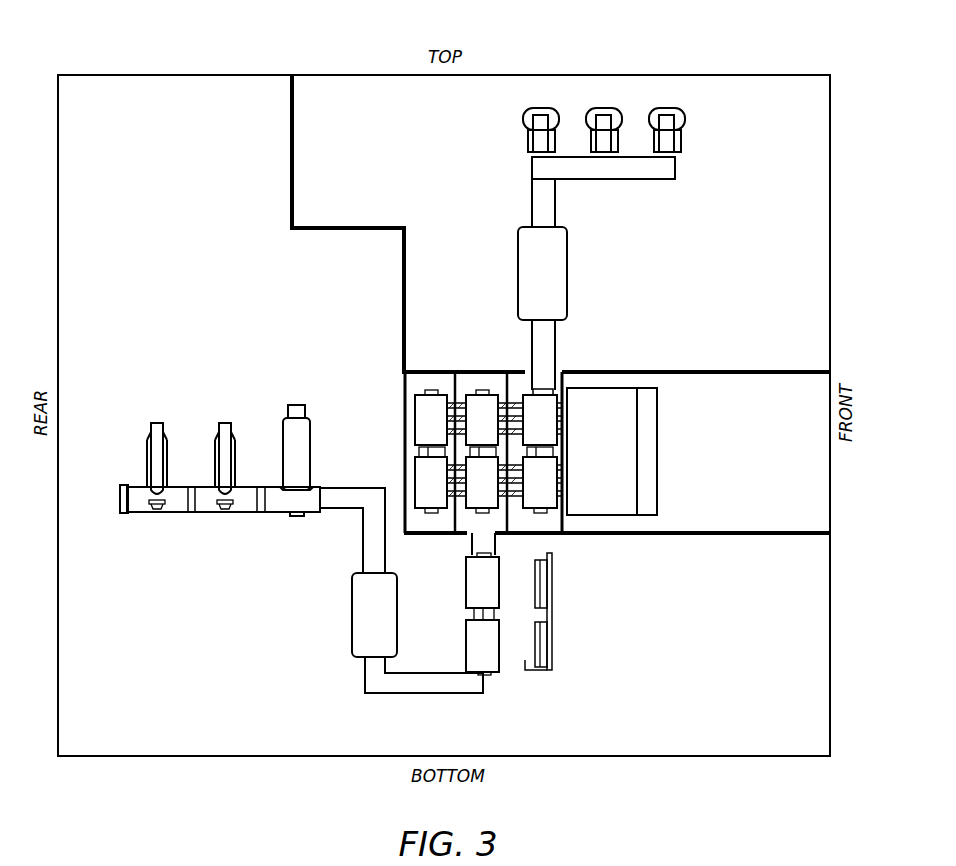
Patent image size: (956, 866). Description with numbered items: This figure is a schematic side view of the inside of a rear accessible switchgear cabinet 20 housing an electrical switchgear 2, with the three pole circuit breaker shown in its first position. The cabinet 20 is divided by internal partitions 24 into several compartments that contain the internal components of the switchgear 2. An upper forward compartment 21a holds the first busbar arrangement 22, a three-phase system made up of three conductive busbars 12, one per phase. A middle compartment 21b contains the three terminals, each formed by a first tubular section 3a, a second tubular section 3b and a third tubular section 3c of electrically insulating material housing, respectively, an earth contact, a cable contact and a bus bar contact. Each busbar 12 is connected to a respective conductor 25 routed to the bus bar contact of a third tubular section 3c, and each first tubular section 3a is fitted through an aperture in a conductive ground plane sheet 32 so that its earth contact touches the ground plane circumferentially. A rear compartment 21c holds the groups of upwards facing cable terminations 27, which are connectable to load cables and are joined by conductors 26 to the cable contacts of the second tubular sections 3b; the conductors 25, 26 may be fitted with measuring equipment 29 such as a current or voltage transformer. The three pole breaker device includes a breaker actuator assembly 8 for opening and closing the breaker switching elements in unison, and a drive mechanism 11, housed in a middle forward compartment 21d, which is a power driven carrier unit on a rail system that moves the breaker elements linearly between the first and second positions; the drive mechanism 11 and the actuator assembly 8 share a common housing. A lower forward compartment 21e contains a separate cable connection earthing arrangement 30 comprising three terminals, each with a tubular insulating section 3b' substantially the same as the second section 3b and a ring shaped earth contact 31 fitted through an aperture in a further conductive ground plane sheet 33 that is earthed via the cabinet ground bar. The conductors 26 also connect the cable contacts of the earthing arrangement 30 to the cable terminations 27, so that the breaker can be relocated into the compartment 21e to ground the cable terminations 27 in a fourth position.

The switchgear cabinet 20 is at (142, 62).
The electrical switchgear 2 is at (396, 62).
The first busbar arrangement 22 is at (680, 94).
The busbar 12 is at (541, 108).
The upper forward compartment 21a is at (803, 99).
The middle compartment 21b is at (427, 387).
The rear compartment 21c is at (83, 99).
The middle forward compartment 21d is at (805, 404).
The lower forward compartment 21e is at (805, 566).
The internal partition 24 is at (292, 168).
The conductor 25 is at (557, 201).
The measuring equipment 29 is at (567, 271).
The cable termination 27 is at (157, 424).
The conductive ground plane sheet 32 is at (414, 452).
The first tubular section 3a is at (440, 451).
The second tubular section 3b is at (494, 451).
The third tubular section 3c is at (542, 454).
The breaker actuator assembly 8 is at (622, 432).
The drive mechanism 11 is at (650, 467).
The conductor 26 is at (467, 553).
The tubular insulating section 3b' is at (455, 616).
The cable connection earthing arrangement 30 is at (563, 662).
The earth contact 31 is at (547, 594).
The conductive ground plane sheet 33 is at (553, 571).